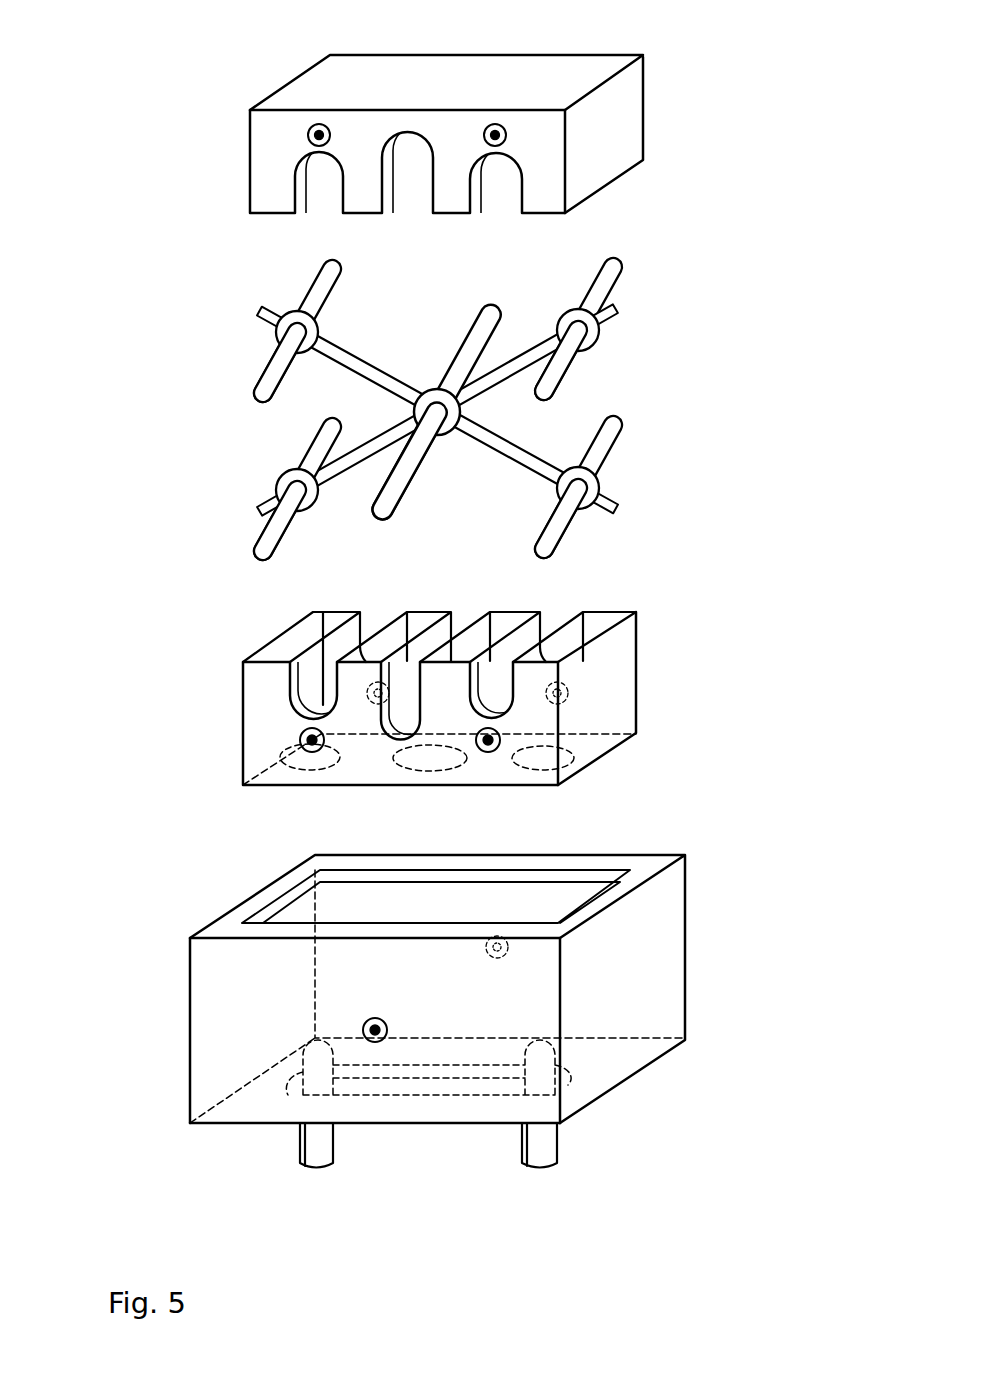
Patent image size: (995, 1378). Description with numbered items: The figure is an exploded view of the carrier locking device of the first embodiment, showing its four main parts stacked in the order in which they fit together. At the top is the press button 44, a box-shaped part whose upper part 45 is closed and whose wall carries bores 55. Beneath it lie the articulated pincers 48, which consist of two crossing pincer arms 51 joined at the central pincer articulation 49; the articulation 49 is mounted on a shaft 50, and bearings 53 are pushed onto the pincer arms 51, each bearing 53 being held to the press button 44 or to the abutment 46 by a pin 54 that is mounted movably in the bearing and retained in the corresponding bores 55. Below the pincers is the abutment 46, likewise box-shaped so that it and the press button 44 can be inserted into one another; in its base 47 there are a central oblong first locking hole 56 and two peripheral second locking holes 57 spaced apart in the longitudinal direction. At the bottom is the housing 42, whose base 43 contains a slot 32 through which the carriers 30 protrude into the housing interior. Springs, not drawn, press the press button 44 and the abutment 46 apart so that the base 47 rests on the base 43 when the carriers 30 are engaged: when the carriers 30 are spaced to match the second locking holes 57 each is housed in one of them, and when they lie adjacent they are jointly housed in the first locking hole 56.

The carriers 30 is at (300, 1140).
The slot 32 is at (365, 1097).
The housing 42 is at (249, 902).
The base of the housing 43 is at (460, 1138).
The press button 44 is at (250, 117).
The upper part of the press button 45 is at (317, 80).
The abutment 46 is at (277, 640).
The base of the abutment 47 is at (505, 765).
The articulated pincers 48 is at (405, 413).
The pincer articulation 49 is at (427, 390).
The shaft 50 is at (488, 325).
The pincer arms 51 is at (393, 383).
The bearings 53 is at (280, 340).
The pin 54 is at (320, 290).
The bores 55 is at (305, 135).
The first locking hole 56 is at (420, 770).
The second locking holes 57 is at (570, 753).